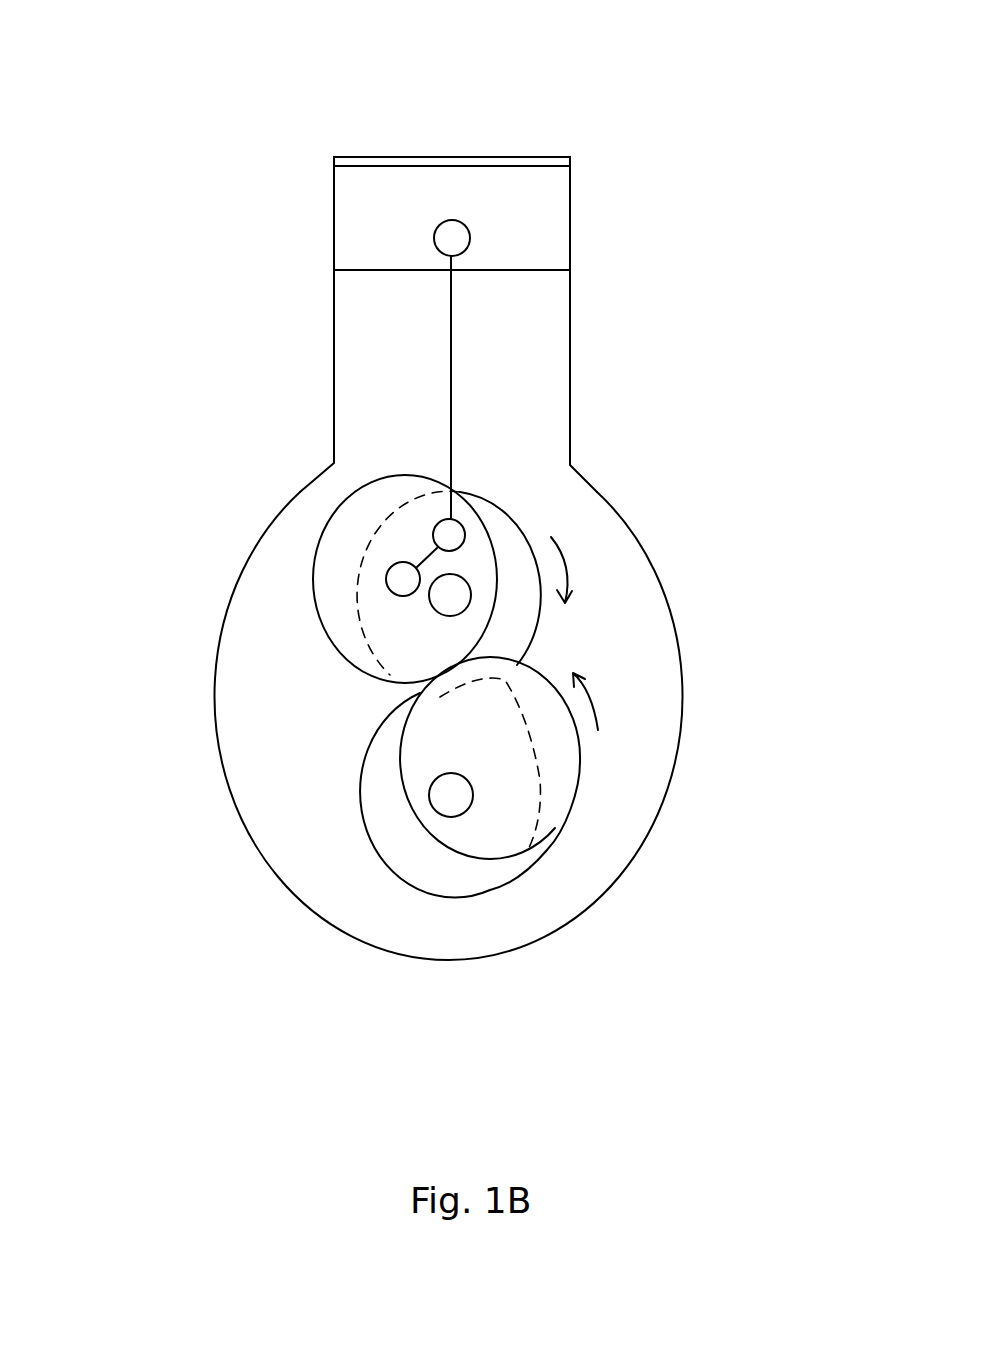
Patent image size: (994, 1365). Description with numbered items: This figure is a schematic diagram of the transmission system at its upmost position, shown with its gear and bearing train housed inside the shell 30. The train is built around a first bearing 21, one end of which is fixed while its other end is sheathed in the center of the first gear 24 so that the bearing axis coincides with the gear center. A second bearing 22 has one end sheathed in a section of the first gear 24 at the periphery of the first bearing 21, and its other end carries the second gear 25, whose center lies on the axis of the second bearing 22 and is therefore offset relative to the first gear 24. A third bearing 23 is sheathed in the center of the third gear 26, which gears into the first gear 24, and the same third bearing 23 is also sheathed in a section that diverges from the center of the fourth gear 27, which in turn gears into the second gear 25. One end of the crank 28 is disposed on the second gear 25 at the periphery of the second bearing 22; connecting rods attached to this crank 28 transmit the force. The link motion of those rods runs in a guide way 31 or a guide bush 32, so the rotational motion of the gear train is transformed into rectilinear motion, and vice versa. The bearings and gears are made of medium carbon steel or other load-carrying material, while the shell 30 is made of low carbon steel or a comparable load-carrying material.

The first bearing 21 is at (437, 616).
The second bearing 22 is at (384, 584).
The third bearing 23 is at (447, 802).
The first gear 24 is at (539, 616).
The second gear 25 is at (493, 550).
The third gear 26 is at (492, 898).
The fourth gear 27 is at (578, 752).
The crank 28 is at (572, 507).
The shell 30 is at (257, 322).
The guide way 31 is at (568, 392).
The guide bush 32 is at (568, 157).